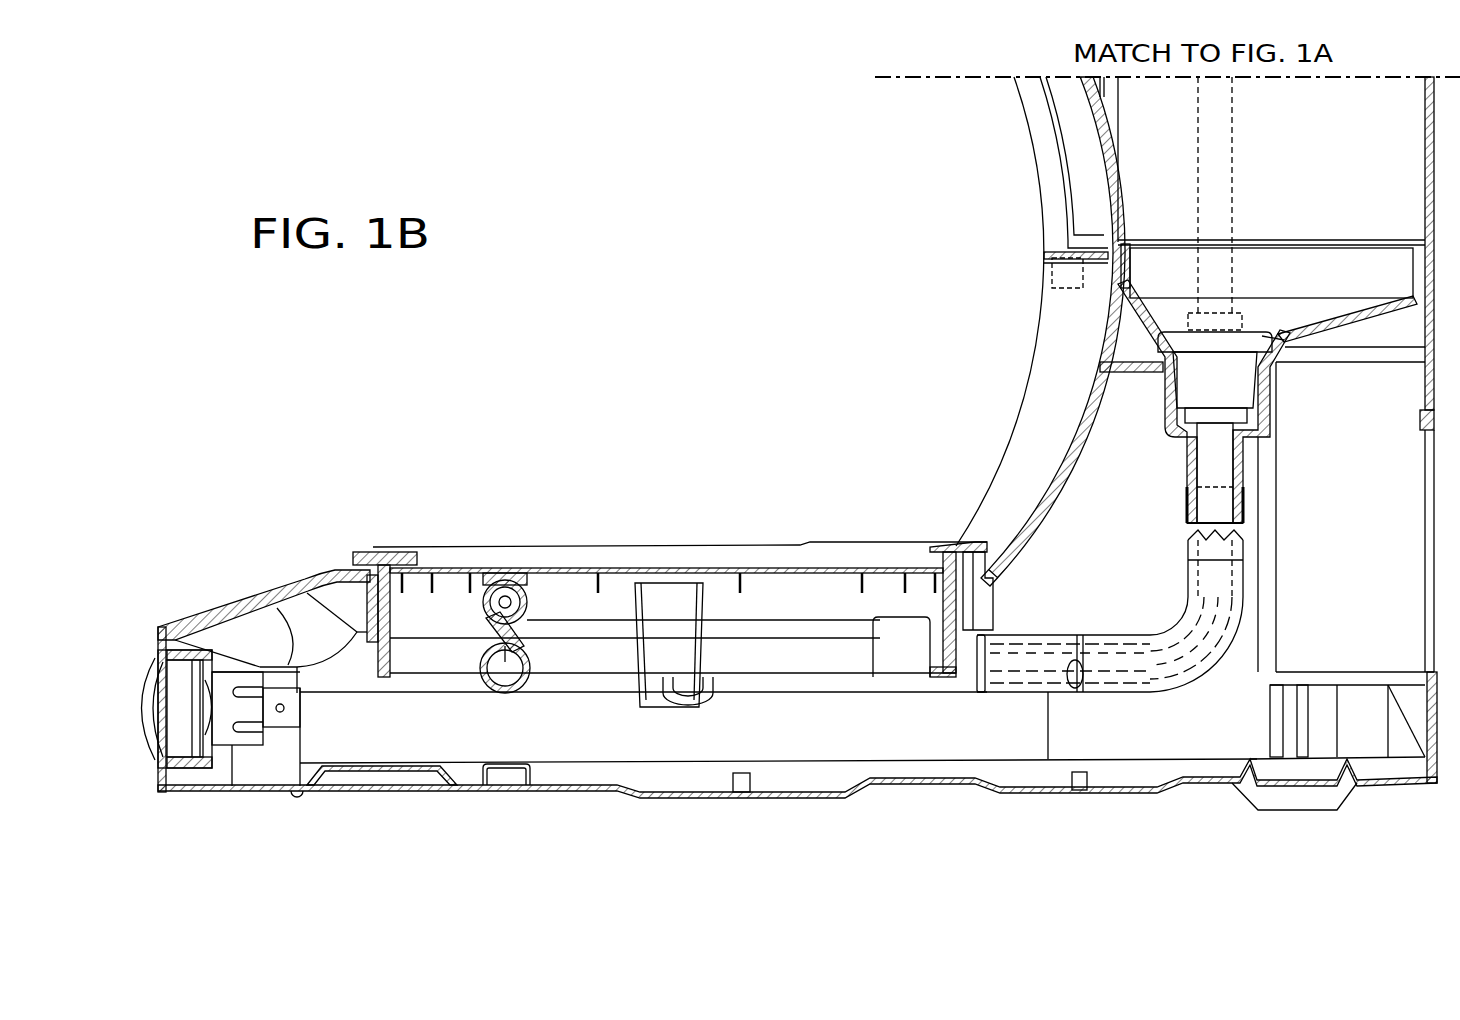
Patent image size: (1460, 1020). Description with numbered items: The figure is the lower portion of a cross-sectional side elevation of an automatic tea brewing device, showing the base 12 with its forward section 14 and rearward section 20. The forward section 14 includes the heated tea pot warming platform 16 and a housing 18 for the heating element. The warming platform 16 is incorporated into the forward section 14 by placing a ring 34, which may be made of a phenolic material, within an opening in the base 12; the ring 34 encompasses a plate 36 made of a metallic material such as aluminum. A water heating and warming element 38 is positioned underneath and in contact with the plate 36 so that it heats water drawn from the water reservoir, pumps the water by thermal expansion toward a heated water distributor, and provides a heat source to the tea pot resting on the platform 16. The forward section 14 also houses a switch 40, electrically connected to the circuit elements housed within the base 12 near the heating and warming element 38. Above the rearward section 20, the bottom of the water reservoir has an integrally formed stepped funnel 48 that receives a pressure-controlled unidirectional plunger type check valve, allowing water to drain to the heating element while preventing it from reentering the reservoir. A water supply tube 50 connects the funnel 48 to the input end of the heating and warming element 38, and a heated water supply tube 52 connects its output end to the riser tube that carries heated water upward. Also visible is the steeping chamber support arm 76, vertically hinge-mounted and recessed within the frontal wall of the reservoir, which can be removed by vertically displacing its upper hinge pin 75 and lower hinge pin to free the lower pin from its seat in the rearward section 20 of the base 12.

The base 12 is at (675, 797).
The forward section 14 is at (225, 797).
The heated tea pot warming platform 16 is at (543, 547).
The housing 18 is at (218, 612).
The rearward section 20 is at (1414, 794).
The ring 34 is at (396, 550).
The plate 36 is at (645, 568).
The water heating and warming element 38 is at (480, 628).
The switch 40 is at (255, 752).
The stepped funnel 48 is at (1250, 467).
The water supply tube 50 is at (1236, 555).
The heated water supply tube 52 is at (1157, 652).
The upper hinge pin 75 is at (1068, 273).
The steeping chamber support arm 76 is at (1048, 147).